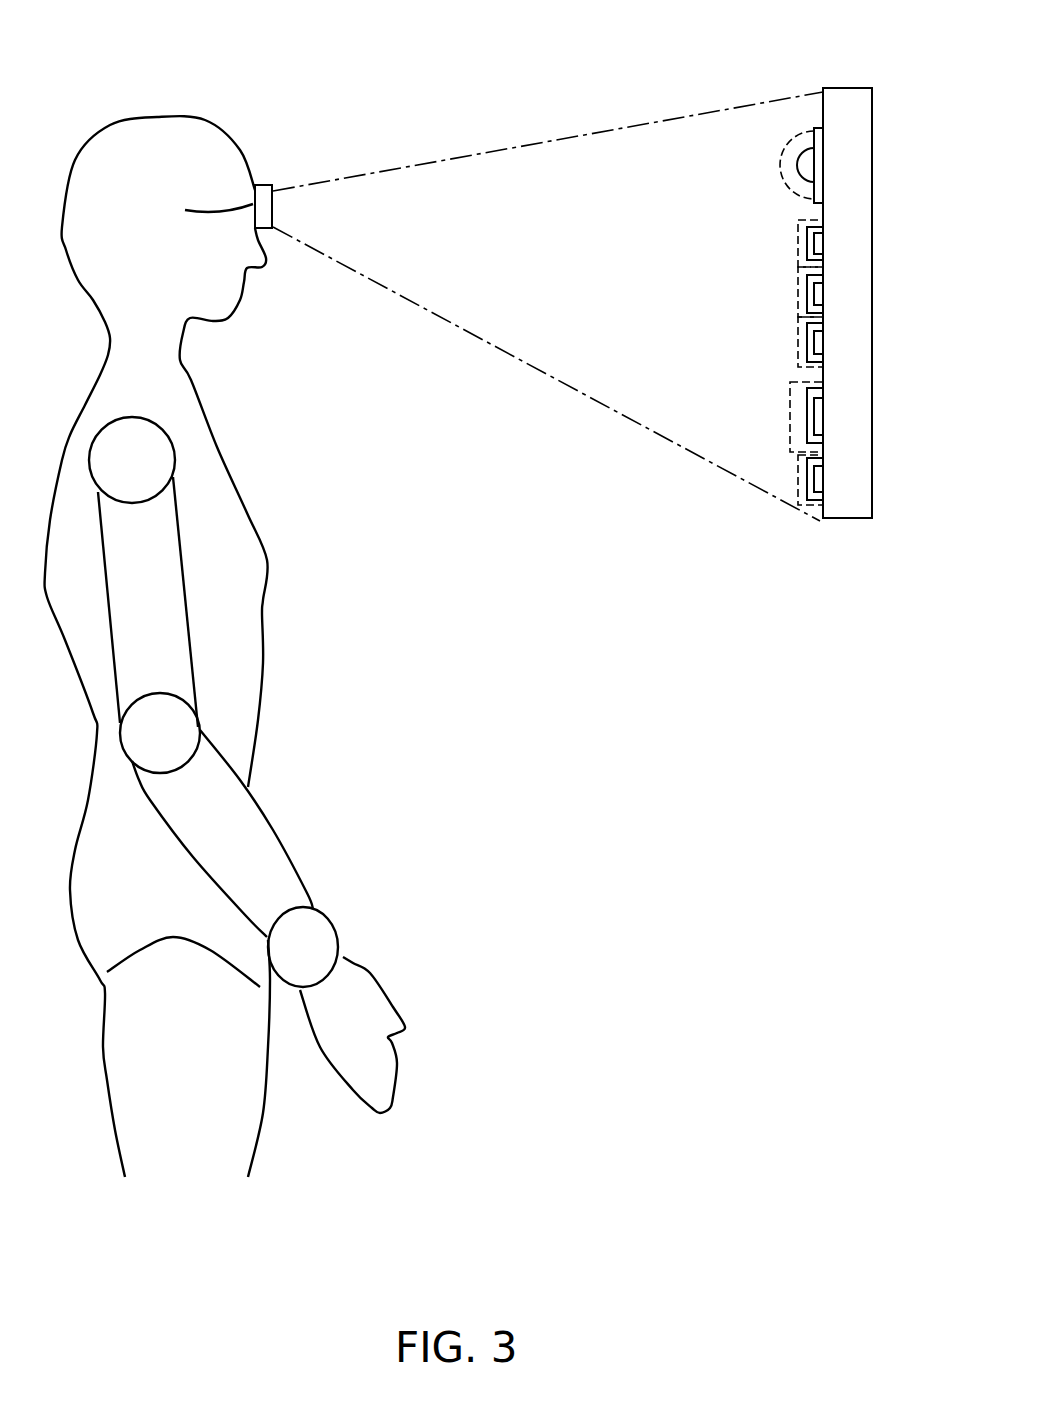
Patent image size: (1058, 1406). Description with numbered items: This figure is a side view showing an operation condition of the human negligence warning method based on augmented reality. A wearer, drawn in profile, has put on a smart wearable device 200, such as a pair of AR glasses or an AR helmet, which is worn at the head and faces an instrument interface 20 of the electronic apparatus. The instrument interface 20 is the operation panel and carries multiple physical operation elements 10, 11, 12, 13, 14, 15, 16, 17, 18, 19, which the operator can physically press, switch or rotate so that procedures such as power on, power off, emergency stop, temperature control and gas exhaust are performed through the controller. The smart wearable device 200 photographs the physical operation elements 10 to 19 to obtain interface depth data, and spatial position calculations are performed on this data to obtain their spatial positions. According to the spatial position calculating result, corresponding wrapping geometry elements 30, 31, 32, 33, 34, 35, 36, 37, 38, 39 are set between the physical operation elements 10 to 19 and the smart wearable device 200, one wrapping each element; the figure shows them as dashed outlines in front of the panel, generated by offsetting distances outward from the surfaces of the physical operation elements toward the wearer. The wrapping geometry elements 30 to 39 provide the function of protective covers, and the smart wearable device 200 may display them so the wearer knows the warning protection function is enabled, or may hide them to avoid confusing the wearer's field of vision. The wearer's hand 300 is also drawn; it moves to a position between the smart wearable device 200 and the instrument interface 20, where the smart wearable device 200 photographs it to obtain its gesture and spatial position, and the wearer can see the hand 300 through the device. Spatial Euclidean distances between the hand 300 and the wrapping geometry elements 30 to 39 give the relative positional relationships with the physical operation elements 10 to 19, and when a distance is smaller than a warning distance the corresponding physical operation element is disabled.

The physical operation element 10 is at (814, 165).
The physical operation element 11 is at (893, 242).
The physical operation element 12 is at (815, 249).
The physical operation element 13 is at (893, 295).
The physical operation element 14 is at (815, 296).
The physical operation element 15 is at (893, 343).
The physical operation element 16 is at (815, 345).
The physical operation element 17 is at (815, 420).
The physical operation element 18 is at (893, 480).
The physical operation element 19 is at (815, 486).
The instrument interface 20 is at (843, 88).
The wrapping geometry element 30 is at (782, 180).
The wrapping geometry element 31 is at (744, 240).
The wrapping geometry element 32 is at (797, 228).
The wrapping geometry element 33 is at (743, 289).
The wrapping geometry element 34 is at (797, 278).
The wrapping geometry element 35 is at (743, 338).
The wrapping geometry element 36 is at (797, 328).
The wrapping geometry element 37 is at (789, 392).
The wrapping geometry element 38 is at (760, 461).
The wrapping geometry element 39 is at (797, 462).
The smart wearable device 200 is at (275, 190).
The hand 300 is at (372, 995).